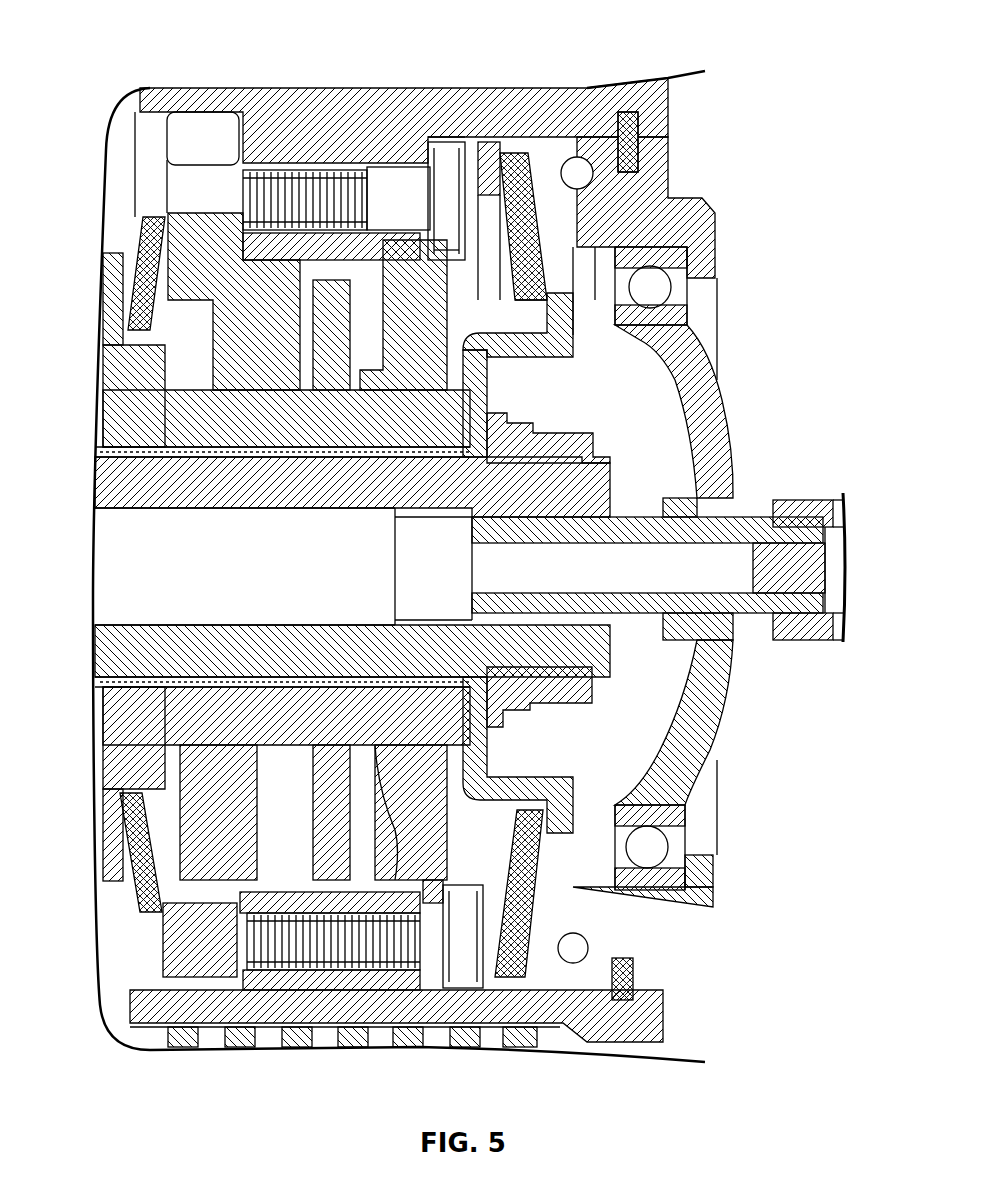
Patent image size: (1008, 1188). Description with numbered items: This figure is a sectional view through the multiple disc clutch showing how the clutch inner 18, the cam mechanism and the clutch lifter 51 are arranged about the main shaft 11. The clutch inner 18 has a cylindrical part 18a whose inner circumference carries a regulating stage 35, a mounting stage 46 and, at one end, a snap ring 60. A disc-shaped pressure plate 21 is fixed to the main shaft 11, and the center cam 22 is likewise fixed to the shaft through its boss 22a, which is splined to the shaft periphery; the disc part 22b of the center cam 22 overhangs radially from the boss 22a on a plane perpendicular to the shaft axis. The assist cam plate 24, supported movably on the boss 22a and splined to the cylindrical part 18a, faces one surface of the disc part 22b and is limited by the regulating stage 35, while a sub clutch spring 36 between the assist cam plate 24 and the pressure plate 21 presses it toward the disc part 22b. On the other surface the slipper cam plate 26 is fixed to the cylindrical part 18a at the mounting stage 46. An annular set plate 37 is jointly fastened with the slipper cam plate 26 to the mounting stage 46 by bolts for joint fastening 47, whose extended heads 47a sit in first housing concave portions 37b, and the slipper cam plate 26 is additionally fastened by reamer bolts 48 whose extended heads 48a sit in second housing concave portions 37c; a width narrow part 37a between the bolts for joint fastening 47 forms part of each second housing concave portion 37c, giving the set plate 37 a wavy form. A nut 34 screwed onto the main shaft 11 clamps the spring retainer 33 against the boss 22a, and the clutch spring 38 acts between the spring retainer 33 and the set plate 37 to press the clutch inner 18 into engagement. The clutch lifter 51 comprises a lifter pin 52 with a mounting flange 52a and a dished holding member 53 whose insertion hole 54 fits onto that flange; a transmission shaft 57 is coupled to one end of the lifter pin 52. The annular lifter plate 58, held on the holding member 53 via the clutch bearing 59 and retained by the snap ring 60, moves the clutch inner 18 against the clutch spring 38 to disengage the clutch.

The main shaft 11 is at (200, 497).
The clutch inner 18 is at (678, 110).
The cylindrical part 18a is at (445, 160).
The pressure plate 21 is at (128, 447).
The center cam 22 is at (380, 455).
The boss 22a is at (237, 435).
The disc part 22b is at (395, 828).
The assist cam plate 24 is at (215, 265).
The slipper cam plate 26 is at (493, 380).
The spring retainer 33 is at (523, 777).
The nut 34 is at (582, 450).
The regulating stage 35 is at (238, 140).
The sub clutch spring 36 is at (140, 230).
The set plate 37 is at (489, 142).
The width narrow part 37a is at (520, 153).
The first housing concave portion 37b is at (543, 863).
The second housing concave portion 37c is at (517, 348).
The clutch spring 38 is at (540, 292).
The mounting stage 46 is at (437, 1027).
The bolt for joint fastening 47 is at (310, 900).
The extended head 47a is at (470, 945).
The reamer bolt 48 is at (293, 185).
The extended head 48a is at (440, 138).
The clutch lifter 51 is at (750, 627).
The lifter pin 52 is at (635, 608).
The mounting flange 52a is at (683, 508).
The holding member 53 is at (723, 462).
The insertion hole 54 is at (745, 515).
The transmission shaft 57 is at (802, 580).
The lifter plate 58 is at (690, 927).
The clutch bearing 59 is at (652, 852).
The snap ring 60 is at (632, 157).